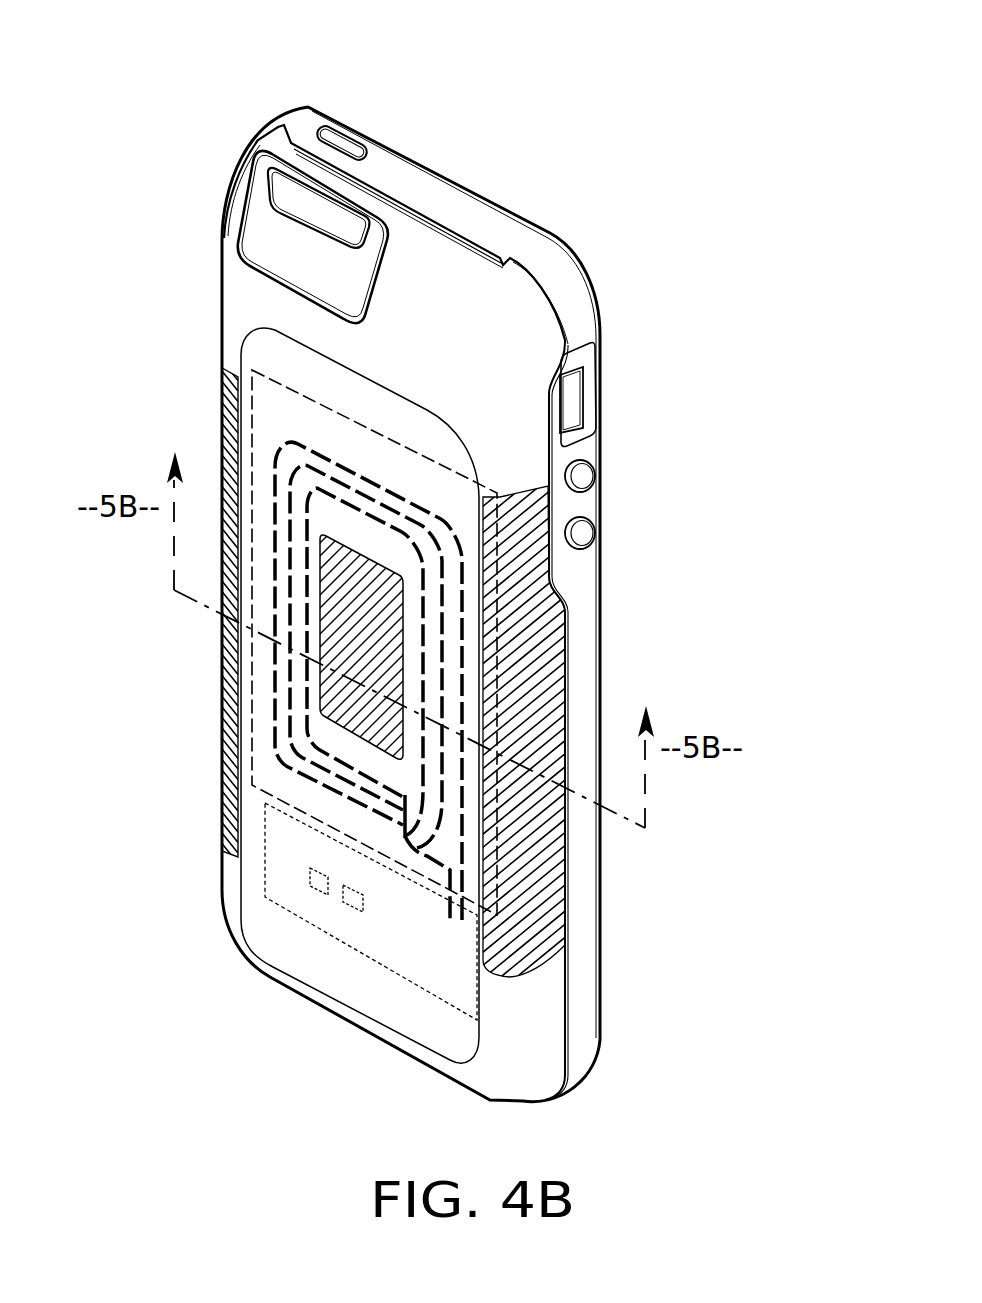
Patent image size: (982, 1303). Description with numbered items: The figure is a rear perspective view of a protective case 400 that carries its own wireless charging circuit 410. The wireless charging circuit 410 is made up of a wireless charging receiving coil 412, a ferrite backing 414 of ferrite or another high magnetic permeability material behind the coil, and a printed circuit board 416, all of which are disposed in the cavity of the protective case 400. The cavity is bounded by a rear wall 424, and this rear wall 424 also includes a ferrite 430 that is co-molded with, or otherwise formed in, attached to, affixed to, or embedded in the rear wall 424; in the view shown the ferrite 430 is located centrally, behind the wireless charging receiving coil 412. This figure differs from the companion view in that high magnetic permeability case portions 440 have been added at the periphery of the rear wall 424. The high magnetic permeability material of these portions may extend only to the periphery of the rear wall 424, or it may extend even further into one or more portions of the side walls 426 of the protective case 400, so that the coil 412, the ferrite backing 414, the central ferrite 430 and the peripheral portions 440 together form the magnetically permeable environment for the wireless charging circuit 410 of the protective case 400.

The protective case 400 is at (411, 566).
The wireless charging circuit 410 is at (698, 884).
The wireless charging receiving coil 412 is at (453, 790).
The ferrite backing 414 is at (483, 820).
The printed circuit board 416 is at (457, 964).
The rear wall 424 is at (272, 926).
The side walls 426 is at (539, 638).
The ferrite 430 is at (343, 703).
The high magnetic permeability case portions 440 is at (222, 790).